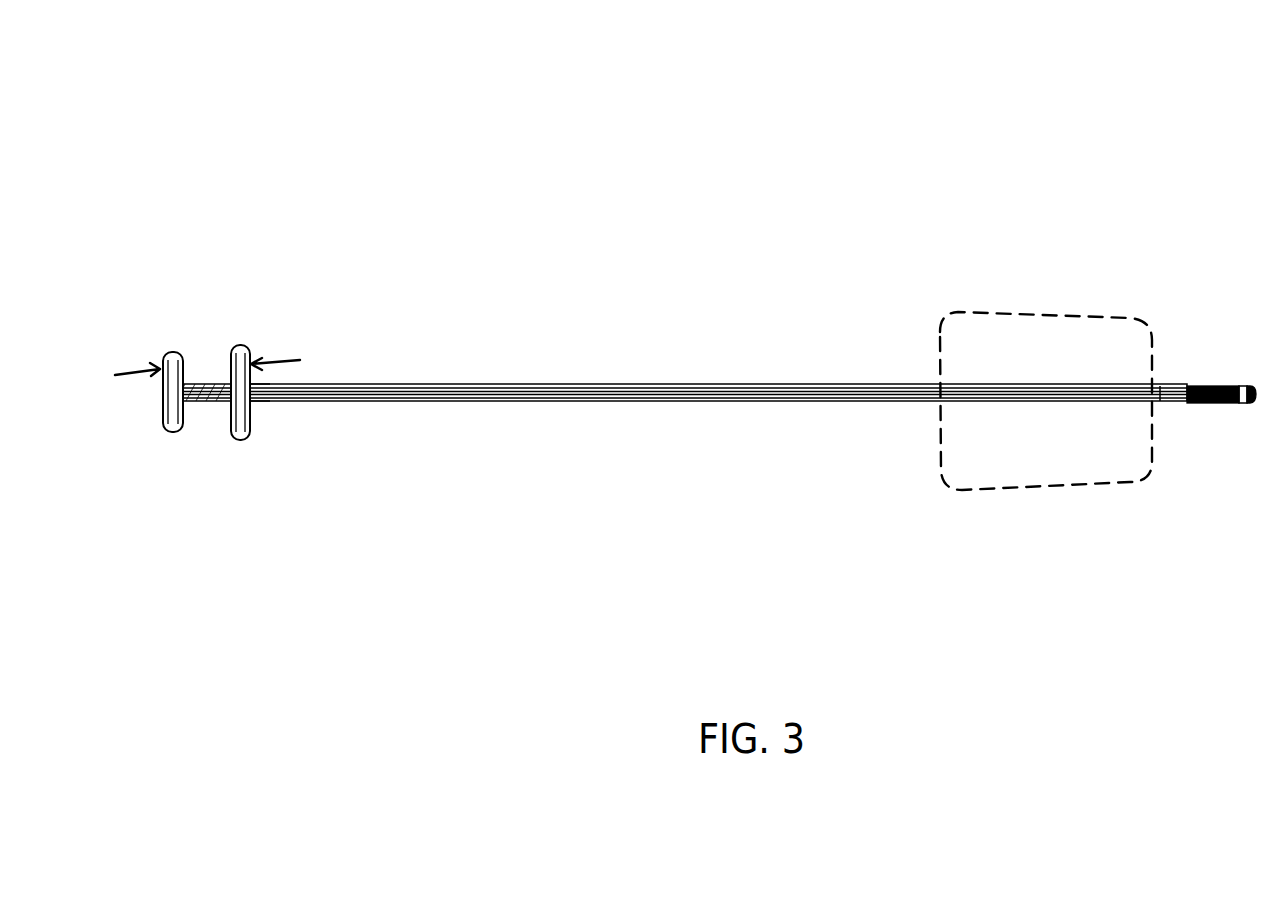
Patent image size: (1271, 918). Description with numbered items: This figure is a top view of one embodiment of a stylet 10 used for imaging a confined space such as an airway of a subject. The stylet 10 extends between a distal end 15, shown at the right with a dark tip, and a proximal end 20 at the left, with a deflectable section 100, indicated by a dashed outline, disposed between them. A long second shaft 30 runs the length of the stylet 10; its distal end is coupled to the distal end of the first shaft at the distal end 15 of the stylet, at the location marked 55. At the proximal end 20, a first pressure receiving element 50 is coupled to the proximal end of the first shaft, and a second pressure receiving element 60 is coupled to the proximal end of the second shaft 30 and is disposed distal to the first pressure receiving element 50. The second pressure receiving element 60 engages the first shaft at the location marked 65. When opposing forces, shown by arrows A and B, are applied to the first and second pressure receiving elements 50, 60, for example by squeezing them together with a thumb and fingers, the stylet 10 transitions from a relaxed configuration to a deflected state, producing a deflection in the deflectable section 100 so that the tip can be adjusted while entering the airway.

The stylet 10 is at (665, 205).
The distal end 15 is at (1224, 238).
The proximal end 20 is at (184, 222).
The second shaft 30 is at (756, 402).
The first pressure receiving element 50 is at (175, 432).
The coupling of the second shaft to the first shaft 55 is at (1167, 407).
The second pressure receiving element 60 is at (248, 437).
The engagement of the second pressure receiving element with the first shaft 65 is at (250, 398).
The deflectable section 100 is at (1058, 485).